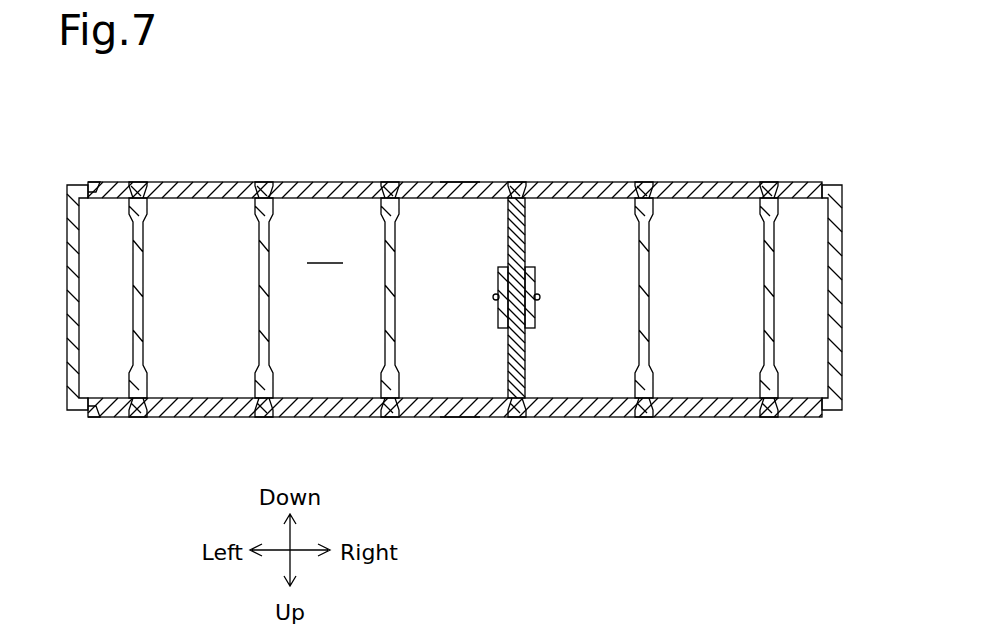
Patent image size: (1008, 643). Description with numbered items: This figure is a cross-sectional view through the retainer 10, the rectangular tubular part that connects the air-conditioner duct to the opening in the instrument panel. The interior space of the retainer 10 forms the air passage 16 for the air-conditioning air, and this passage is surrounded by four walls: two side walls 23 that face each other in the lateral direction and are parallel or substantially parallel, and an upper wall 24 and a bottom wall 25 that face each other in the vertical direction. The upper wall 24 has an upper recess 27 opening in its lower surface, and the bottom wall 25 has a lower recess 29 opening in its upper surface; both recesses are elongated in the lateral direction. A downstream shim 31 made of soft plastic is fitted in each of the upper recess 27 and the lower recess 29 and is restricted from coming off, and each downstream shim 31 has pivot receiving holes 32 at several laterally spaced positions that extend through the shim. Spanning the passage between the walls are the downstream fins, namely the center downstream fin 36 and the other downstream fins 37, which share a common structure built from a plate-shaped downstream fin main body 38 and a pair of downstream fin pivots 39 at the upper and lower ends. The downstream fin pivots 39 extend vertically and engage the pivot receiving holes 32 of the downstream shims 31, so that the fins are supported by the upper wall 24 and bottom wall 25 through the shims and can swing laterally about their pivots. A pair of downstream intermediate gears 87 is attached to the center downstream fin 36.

The retainer 10 is at (460, 305).
The air passage 16 is at (325, 249).
The side wall 23 is at (70, 295).
The upper wall 24 is at (100, 414).
The bottom wall 25 is at (94, 186).
The upper recess 27 is at (205, 415).
The lower recess 29 is at (200, 190).
The downstream shim 31 is at (452, 192).
The pivot receiving hole 32 is at (137, 188).
The downstream fin 36 is at (527, 242).
The downstream fin 37 is at (145, 290).
The downstream fin main body 38 is at (453, 298).
The downstream fin pivot 39 is at (262, 190).
The downstream intermediate gear 87 is at (498, 316).